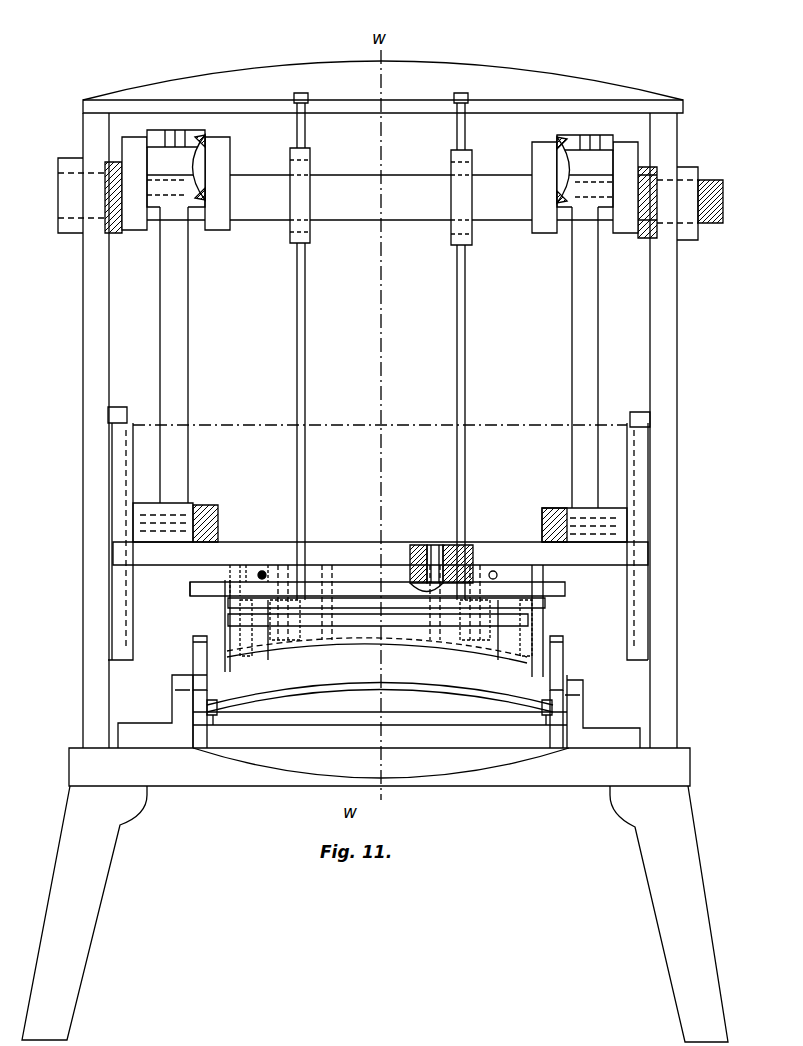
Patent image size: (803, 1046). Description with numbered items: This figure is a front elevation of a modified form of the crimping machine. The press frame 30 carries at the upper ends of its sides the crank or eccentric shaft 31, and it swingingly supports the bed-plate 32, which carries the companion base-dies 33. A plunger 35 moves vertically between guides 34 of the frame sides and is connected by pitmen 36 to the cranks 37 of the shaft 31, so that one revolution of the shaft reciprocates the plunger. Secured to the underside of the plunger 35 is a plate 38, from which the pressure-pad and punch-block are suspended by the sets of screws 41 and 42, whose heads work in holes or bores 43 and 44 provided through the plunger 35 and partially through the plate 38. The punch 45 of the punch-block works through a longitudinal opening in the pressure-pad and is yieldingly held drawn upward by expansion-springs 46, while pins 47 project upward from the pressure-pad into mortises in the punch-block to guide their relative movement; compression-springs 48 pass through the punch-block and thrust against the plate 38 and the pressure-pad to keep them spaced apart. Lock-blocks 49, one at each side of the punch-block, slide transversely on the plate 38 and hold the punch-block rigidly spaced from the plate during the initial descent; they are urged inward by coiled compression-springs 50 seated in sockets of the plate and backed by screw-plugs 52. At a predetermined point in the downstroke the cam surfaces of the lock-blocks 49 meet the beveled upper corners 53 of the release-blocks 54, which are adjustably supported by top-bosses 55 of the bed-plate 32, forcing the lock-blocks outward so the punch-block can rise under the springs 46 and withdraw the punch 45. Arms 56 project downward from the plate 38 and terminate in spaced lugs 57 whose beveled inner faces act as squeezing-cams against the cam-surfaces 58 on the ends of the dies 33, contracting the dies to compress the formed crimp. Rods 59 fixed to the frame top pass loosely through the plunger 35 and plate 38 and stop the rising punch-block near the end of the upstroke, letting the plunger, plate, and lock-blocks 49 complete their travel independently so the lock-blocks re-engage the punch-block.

The press frame 30 is at (95, 359).
The crank or eccentric shaft 31 is at (389, 197).
The bed-plate 32 is at (334, 740).
The base-dies 33 is at (434, 706).
The guides 34 is at (118, 413).
The plunger 35 is at (359, 542).
The pitmen 36 is at (380, 374).
The cranks 37 is at (192, 172).
The plate 38 is at (360, 582).
The screws 41 is at (412, 578).
The screws 42 is at (468, 570).
The holes or bores 43 is at (416, 551).
The holes or bores 44 is at (439, 551).
The punch 45 is at (377, 656).
The expansion-springs 46 is at (381, 631).
The pins 47 is at (380, 641).
The compression-springs 48 is at (462, 620).
The lock-blocks 49 is at (190, 589).
The coiled compression-springs 50 is at (218, 608).
The screw-plugs 52 is at (262, 571).
The beveled upper corners 53 is at (193, 638).
The release-blocks 54 is at (193, 656).
The top-bosses 55 is at (180, 705).
The arms 56 is at (545, 614).
The lugs 57 is at (378, 671).
The cam-surfaces 58 is at (223, 715).
The rods 59 is at (301, 357).